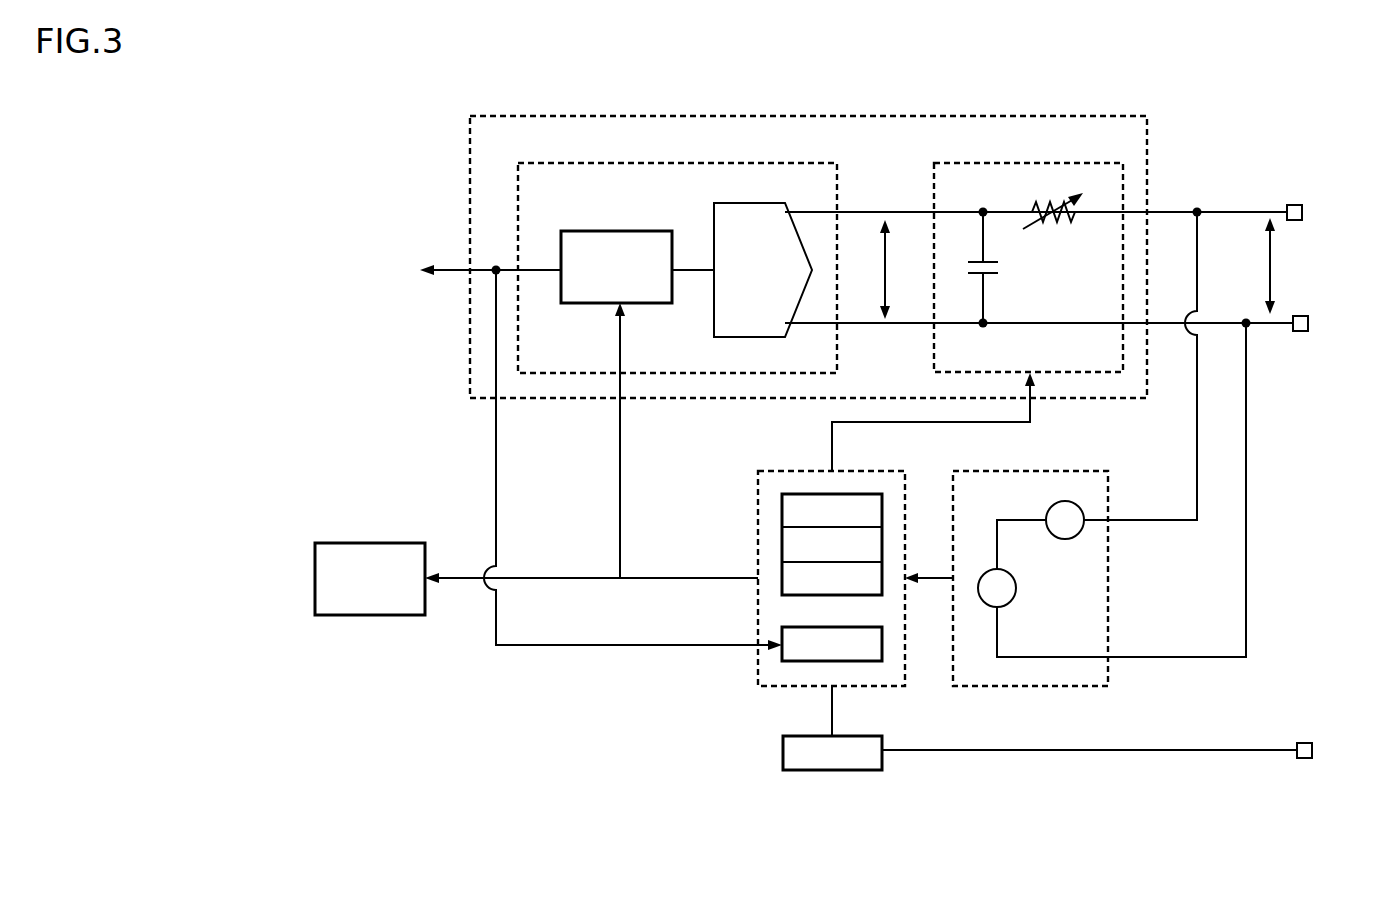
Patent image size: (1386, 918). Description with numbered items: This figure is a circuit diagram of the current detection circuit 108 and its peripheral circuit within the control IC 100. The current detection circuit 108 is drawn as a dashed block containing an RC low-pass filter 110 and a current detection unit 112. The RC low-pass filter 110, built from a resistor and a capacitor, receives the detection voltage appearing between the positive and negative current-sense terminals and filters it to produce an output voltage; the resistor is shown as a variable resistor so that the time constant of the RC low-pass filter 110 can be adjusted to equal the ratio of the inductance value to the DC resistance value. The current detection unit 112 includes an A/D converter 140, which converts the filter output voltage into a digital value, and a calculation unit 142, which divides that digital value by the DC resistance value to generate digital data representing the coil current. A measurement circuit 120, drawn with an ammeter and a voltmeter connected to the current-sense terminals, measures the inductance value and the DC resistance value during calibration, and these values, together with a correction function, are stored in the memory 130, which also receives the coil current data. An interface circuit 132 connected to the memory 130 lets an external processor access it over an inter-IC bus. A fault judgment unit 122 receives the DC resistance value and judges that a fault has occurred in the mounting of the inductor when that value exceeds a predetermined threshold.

The control IC 100 is at (878, 884).
The current detection circuit 108 is at (809, 116).
The RC low-pass filter 110 is at (1026, 163).
The current detection unit 112 is at (676, 163).
The measurement circuit 120 is at (1033, 688).
The fault judgment unit 122 is at (375, 543).
The memory 130 is at (794, 471).
The interface circuit 132 is at (834, 772).
The A/D converter 140 is at (713, 318).
The calculation unit 142 is at (629, 213).